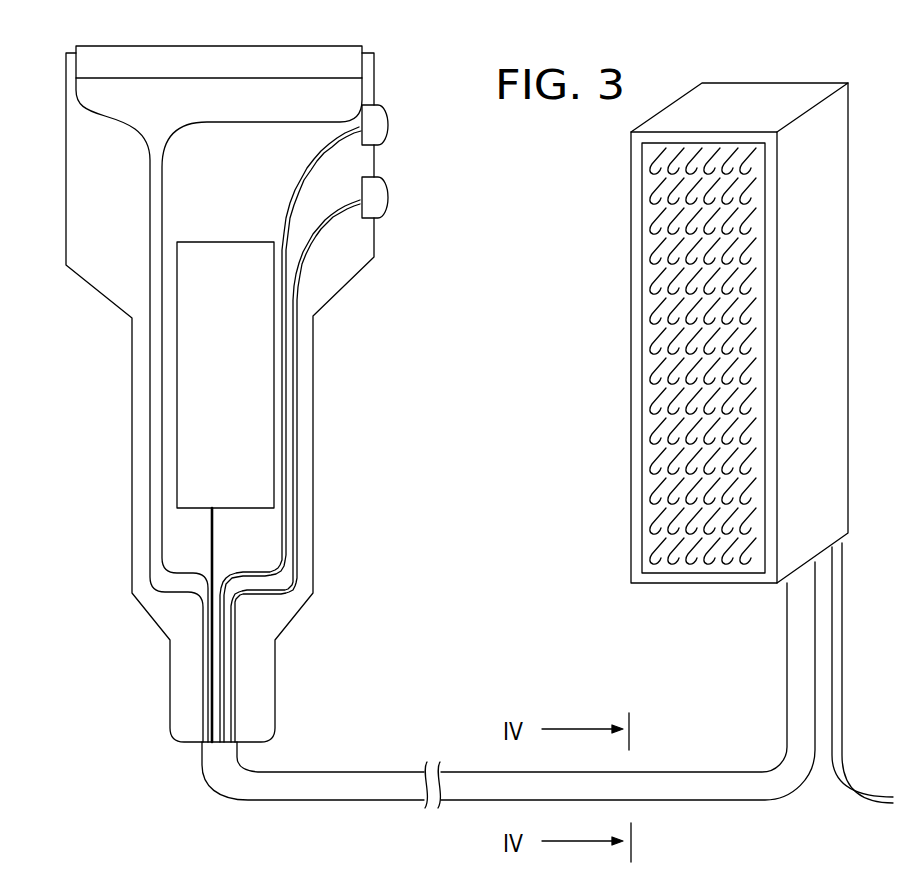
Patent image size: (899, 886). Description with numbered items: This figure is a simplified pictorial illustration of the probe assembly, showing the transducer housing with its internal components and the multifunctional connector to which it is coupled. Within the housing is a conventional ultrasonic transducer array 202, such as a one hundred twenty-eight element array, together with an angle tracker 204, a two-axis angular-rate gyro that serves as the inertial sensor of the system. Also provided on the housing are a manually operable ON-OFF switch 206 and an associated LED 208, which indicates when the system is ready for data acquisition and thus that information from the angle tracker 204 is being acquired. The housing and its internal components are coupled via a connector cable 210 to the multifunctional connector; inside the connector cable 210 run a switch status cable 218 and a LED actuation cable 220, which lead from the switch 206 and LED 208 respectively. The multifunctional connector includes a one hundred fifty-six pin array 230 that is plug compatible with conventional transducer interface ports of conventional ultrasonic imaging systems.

The ultrasonic transducer array 202 is at (218, 46).
The angle tracker 204 is at (226, 250).
The ON-OFF switch 206 is at (377, 113).
The LED 208 is at (377, 185).
The connector cable 210 is at (297, 772).
The switch status cable 218 is at (304, 190).
The LED actuation cable 220 is at (323, 222).
The pin array 230 is at (655, 228).